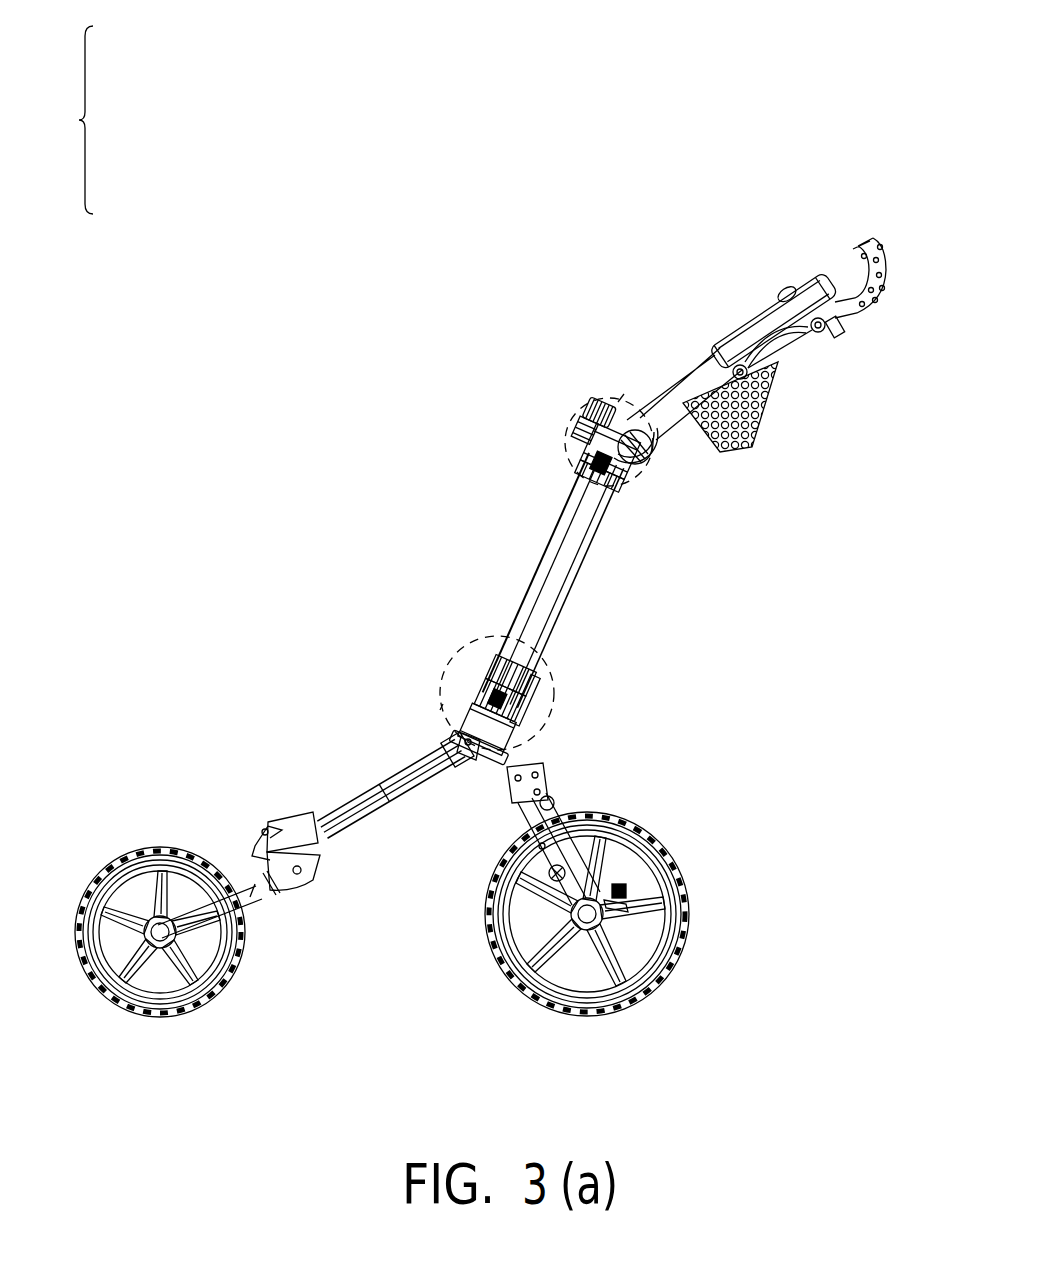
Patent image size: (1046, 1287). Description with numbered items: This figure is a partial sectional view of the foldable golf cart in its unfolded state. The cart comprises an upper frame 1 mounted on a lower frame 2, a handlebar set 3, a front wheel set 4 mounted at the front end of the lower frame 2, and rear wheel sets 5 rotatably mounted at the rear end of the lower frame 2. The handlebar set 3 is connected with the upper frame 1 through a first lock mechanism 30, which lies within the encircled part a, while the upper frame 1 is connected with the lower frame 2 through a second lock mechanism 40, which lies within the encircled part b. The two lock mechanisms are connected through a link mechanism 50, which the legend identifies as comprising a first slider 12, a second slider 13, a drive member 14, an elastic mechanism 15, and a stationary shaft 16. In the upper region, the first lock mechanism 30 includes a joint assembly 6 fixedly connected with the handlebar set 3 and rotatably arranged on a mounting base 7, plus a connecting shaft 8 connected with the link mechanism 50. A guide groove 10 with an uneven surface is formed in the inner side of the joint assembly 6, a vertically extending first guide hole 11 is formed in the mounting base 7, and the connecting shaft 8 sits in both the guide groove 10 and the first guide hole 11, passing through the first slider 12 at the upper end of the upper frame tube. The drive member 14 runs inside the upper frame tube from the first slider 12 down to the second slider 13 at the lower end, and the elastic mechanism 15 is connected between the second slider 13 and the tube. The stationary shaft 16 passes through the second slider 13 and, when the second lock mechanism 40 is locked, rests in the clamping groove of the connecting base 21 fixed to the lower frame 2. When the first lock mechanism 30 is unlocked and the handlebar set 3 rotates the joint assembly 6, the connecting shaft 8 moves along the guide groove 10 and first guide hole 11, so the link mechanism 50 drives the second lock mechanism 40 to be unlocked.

The upper frame 1 is at (532, 572).
The lower frame 2 is at (322, 820).
The handlebar set 3 is at (763, 390).
The front wheel set 4 is at (167, 897).
The rear wheel set 5 is at (617, 888).
The joint assembly 6 is at (652, 440).
The mounting base 7 is at (600, 407).
The connecting shaft 8 is at (585, 463).
The guide groove 10 is at (653, 447).
The first guide hole 11 is at (583, 450).
The first slider 12 is at (617, 477).
The second slider 13 is at (483, 697).
The drive member 14 is at (577, 493).
The elastic mechanism 15 is at (497, 677).
The stationary shaft 16 is at (521, 690).
The connecting base 21 is at (527, 733).
The first lock mechanism 30 is at (612, 373).
The second lock mechanism 40 is at (392, 685).
The link mechanism 50 is at (86, 119).
The part a is at (618, 402).
The part b is at (440, 710).